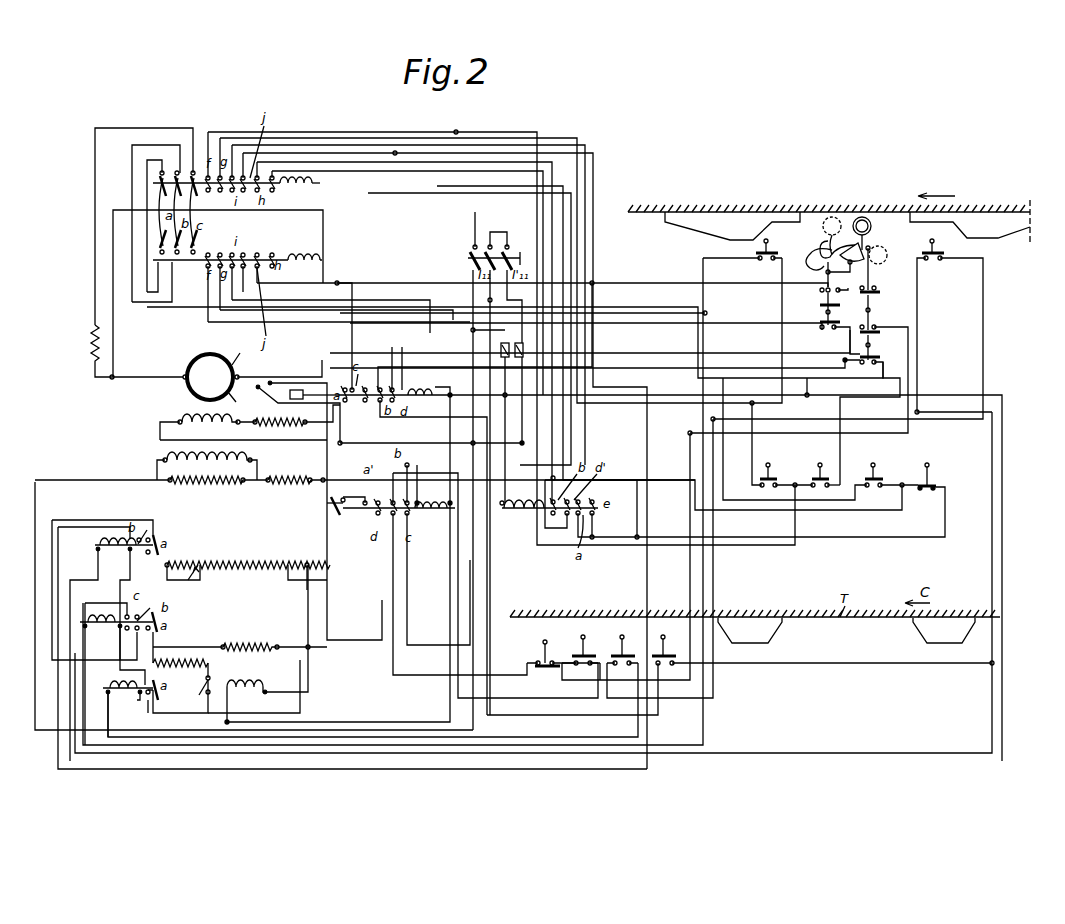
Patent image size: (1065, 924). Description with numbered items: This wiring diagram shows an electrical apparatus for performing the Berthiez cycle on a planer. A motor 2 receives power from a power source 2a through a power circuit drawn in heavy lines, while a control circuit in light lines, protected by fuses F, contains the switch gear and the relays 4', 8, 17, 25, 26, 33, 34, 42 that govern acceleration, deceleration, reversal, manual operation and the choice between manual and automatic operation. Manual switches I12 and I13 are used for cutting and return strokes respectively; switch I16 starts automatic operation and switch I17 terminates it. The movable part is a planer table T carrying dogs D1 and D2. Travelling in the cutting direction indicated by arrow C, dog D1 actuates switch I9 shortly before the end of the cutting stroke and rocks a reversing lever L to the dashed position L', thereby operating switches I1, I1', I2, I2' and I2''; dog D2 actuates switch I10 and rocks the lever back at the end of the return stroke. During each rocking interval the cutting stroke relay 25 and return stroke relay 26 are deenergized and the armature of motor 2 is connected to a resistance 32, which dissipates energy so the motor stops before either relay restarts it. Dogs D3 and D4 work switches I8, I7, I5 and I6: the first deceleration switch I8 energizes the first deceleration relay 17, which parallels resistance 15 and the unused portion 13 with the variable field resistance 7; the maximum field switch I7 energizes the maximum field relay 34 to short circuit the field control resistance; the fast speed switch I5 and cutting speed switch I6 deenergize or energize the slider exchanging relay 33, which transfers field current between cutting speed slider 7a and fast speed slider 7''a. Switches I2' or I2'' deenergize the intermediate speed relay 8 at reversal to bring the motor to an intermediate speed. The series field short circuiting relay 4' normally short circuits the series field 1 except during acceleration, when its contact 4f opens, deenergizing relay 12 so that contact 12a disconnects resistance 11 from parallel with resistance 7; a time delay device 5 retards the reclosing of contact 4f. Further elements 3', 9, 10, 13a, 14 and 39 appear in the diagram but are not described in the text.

The series field 1 is at (194, 418).
The motor 2 is at (252, 377).
The power source 2a is at (495, 462).
The resistor 3' is at (290, 414).
The series field short circuiting relay 4' is at (668, 554).
The contact 4f is at (289, 470).
The time delay device 5 is at (296, 390).
The variable field resistance 7 is at (240, 584).
The slider 7a is at (198, 564).
The slider 7''a is at (200, 584).
The intermediate speed relay 8 is at (105, 640).
The resistor 9 is at (287, 478).
The coil 10 is at (205, 470).
The resistance 11 is at (185, 660).
The relay 12 is at (266, 644).
The contact 12a is at (179, 696).
The unused portion of variable field resistance 13 is at (190, 562).
The resistor 13a is at (240, 562).
The contact 14 is at (310, 566).
The resistance 15 is at (240, 637).
The first deceleration relay 17 is at (118, 674).
The cutting stroke relay 25 is at (292, 180).
The return stroke relay 26 is at (302, 263).
The resistance 32 is at (92, 342).
The slider exchanging relay 33 is at (437, 514).
The maximum field relay 34 is at (130, 708).
The resistor 39 is at (234, 482).
The relay 42 is at (522, 514).
The fuses F is at (512, 416).
The planer table T is at (860, 210).
The arrow C is at (937, 182).
The reversing lever L is at (846, 243).
The reversing lever position L' is at (892, 254).
The dog D1 is at (982, 222).
The dog D2 is at (703, 222).
The dog D3 is at (754, 628).
The dog D4 is at (944, 628).
The switch I1 is at (876, 269).
The switch I1' is at (799, 364).
The switch I2 is at (821, 279).
The switch I2' is at (870, 410).
The switch I2'' is at (840, 323).
The fast speed switch I5 is at (562, 653).
The cutting speed switch I6 is at (581, 650).
The maximum field switch I7 is at (622, 650).
The first deceleration switch I8 is at (823, 650).
The switch I9 is at (851, 327).
The switch I10 is at (746, 246).
The manual switch I12 is at (782, 445).
The manual switch I13 is at (828, 473).
The switch I16 is at (820, 439).
The switch I17 is at (795, 498).